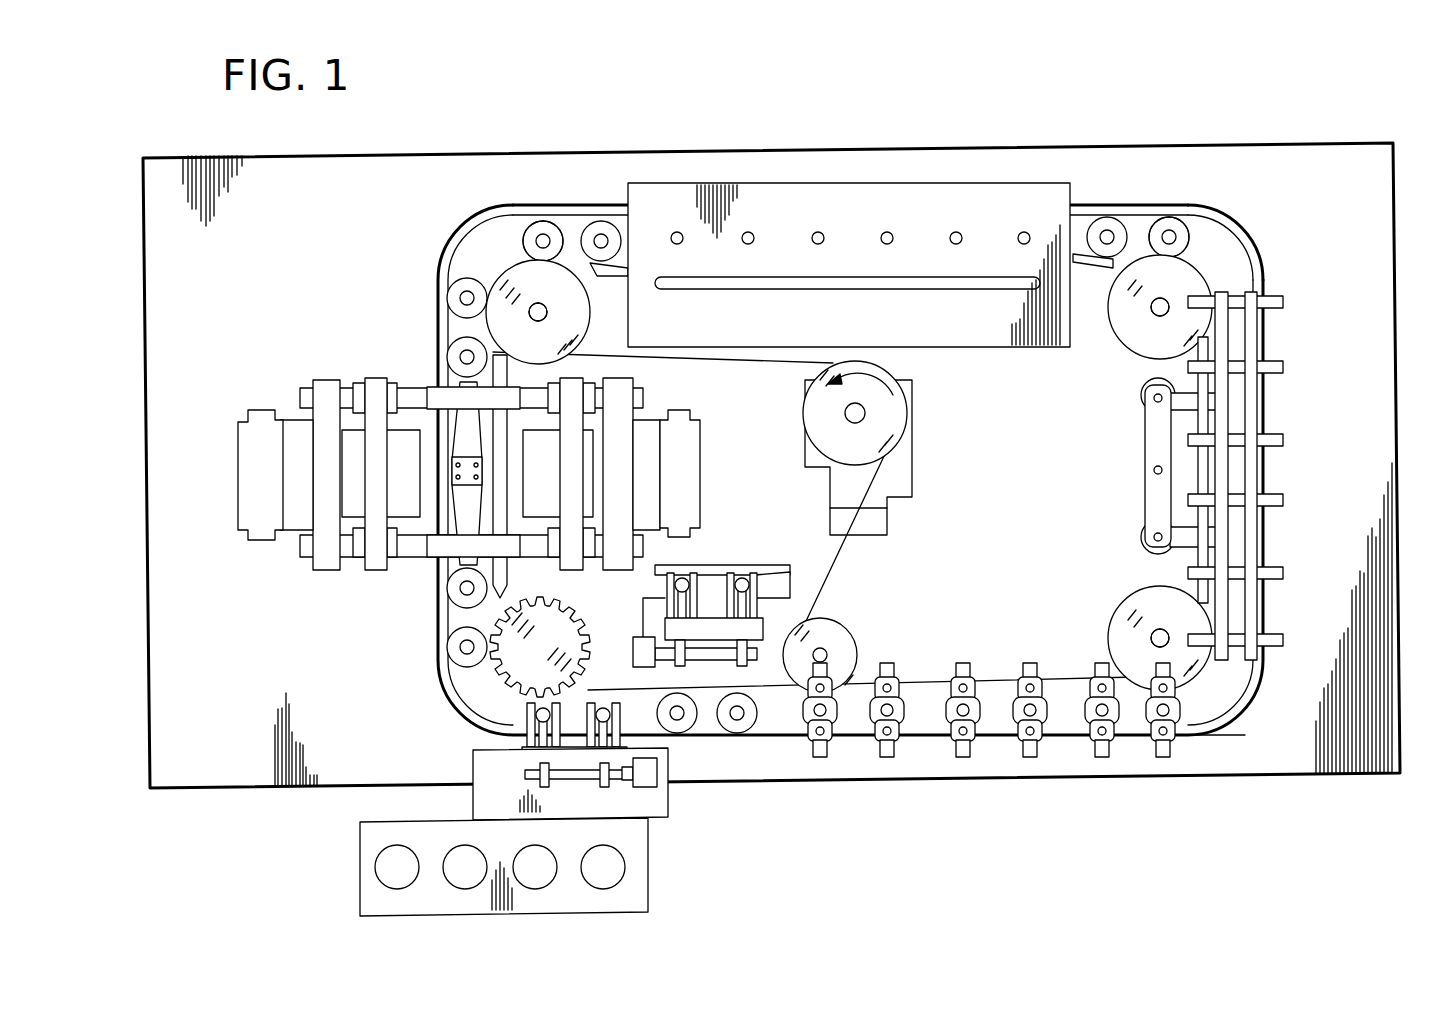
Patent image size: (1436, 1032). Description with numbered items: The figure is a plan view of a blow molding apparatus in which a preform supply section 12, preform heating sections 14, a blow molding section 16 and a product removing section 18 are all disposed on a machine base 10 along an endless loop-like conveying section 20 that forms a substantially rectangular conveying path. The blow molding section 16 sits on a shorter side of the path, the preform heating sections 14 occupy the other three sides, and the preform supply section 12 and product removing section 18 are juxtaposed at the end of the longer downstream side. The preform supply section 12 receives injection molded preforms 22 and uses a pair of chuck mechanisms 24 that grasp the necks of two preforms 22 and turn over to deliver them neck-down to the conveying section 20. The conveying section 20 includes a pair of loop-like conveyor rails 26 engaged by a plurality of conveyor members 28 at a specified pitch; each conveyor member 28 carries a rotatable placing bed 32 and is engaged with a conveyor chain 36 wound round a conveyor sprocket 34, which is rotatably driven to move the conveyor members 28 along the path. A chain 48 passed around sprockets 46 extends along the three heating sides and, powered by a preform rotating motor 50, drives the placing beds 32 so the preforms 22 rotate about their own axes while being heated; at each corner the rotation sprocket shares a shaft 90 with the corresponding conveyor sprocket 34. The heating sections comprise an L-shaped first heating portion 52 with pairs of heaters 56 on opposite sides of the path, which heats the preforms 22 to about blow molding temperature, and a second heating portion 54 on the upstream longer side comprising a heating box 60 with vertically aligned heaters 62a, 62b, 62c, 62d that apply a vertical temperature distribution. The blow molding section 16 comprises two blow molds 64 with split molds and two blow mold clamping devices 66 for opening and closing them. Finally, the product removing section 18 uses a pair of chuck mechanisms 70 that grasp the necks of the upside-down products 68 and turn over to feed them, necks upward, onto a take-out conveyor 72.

The machine base 10 is at (1340, 516).
The preform supply section 12 is at (686, 583).
The preform heating sections 14 is at (1276, 480).
The blow molding section 16 is at (443, 411).
The product removing section 18 is at (660, 800).
The conveying section 20 is at (1207, 203).
The preforms 22 is at (455, 288).
The chuck mechanisms 24 is at (665, 584).
The conveyor rails 26 is at (1245, 238).
The conveyor members 28 is at (597, 222).
The placing bed 32 is at (543, 222).
The conveyor sprocket 34 is at (500, 670).
The conveyor chain 36 is at (446, 615).
The sprockets 46 is at (520, 275).
The chain 48 is at (843, 548).
The preform rotating motor 50 is at (905, 478).
The first heating portion 52 is at (1002, 662).
The second heating portion 54 is at (904, 168).
The heaters 56 is at (1170, 722).
The heating box 60 is at (806, 200).
The heater 62a is at (790, 290).
The heater 62b is at (818, 238).
The heater 62c is at (887, 238).
The heater 62d is at (990, 238).
The blow molds 64 is at (403, 437).
The blow mold clamping devices 66 is at (240, 500).
The products 68 is at (563, 881).
The chuck mechanisms 70 is at (525, 712).
The take-out conveyor 72 is at (630, 890).
The shaft 90 is at (530, 312).